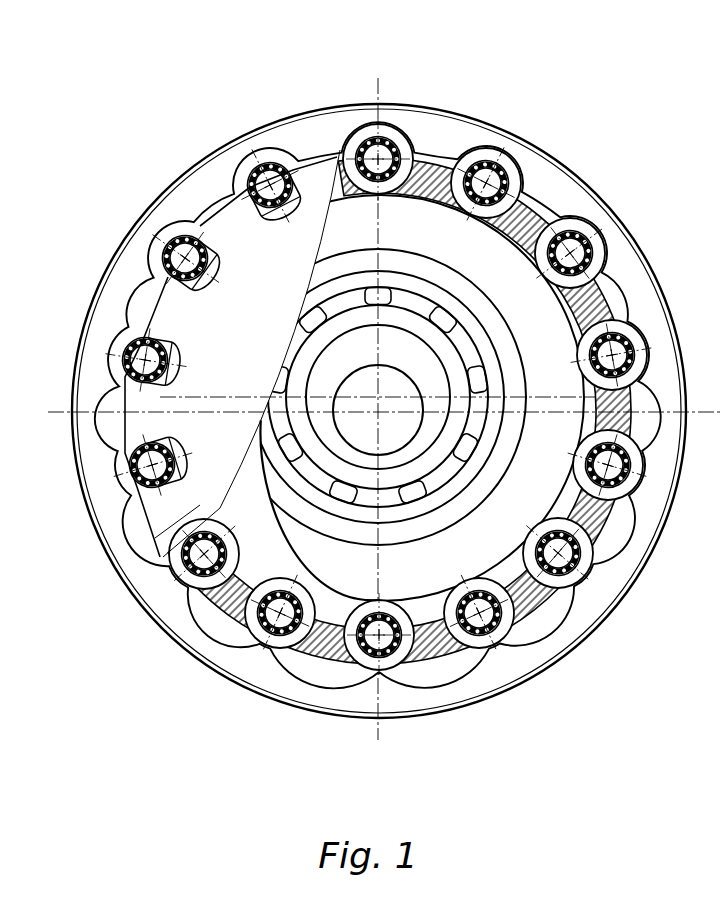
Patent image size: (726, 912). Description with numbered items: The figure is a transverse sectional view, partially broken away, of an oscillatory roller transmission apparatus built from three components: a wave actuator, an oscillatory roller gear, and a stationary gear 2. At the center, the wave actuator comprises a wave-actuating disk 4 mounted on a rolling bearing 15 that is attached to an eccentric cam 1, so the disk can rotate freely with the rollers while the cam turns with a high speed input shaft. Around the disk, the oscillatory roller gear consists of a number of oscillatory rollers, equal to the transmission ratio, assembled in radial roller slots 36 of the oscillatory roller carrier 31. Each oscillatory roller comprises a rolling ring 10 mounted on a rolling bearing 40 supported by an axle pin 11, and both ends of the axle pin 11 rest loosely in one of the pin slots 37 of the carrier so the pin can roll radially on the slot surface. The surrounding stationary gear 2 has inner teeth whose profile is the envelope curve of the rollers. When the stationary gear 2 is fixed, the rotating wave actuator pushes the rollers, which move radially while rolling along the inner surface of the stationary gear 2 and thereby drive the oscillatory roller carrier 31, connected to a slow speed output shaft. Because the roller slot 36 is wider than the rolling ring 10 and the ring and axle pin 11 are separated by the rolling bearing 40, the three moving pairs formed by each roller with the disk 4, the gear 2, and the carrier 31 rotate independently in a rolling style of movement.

The eccentric cam 1 is at (400, 352).
The stationary gear 2 is at (250, 668).
The wave-actuating disk 4 is at (397, 210).
The rolling ring 10 is at (368, 130).
The axle pin 11 is at (387, 138).
The rolling bearing 15 is at (385, 306).
The oscillatory roller carrier 31 is at (430, 662).
The radial roller slot 36 is at (555, 608).
The pin slot 37 is at (185, 258).
The rolling bearing 40 is at (335, 158).